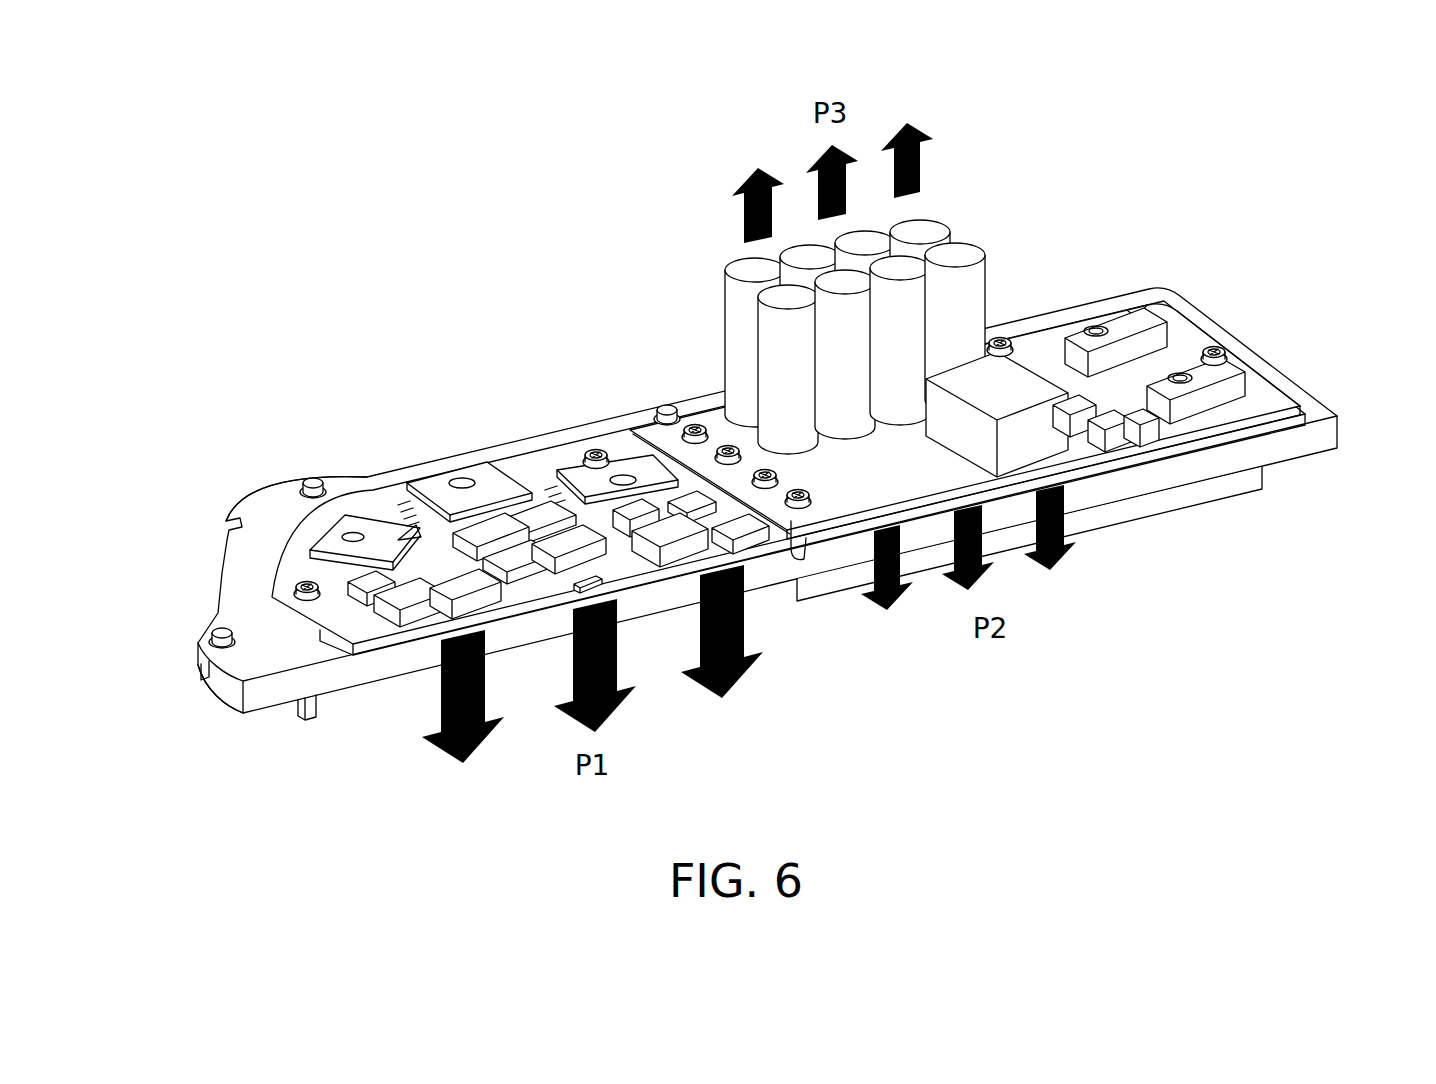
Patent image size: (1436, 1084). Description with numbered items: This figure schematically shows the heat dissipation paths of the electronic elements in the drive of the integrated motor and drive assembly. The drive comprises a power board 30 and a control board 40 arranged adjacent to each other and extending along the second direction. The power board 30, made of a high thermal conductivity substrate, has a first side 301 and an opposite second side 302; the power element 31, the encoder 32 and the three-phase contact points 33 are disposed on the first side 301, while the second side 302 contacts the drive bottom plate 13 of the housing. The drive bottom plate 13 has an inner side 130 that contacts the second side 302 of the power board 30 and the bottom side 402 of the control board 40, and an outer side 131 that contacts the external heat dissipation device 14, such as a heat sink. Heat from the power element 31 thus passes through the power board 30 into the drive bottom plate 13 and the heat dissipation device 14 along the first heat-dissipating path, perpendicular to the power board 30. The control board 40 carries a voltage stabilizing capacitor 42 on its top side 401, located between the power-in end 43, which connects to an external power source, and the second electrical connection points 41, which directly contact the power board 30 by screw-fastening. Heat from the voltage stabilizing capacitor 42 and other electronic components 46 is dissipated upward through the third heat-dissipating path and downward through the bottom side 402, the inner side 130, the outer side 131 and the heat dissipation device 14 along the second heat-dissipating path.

The drive bottom plate 13 is at (225, 677).
The inner side 130 is at (252, 652).
The outer side 131 is at (273, 711).
The heat dissipation device 14 is at (797, 590).
The power board 30 is at (365, 646).
The first side 301 is at (293, 557).
The second side 302 is at (413, 641).
The power element 31 is at (412, 553).
The encoder 32 is at (453, 480).
The three-phase contact points 33 is at (488, 478).
The control board 40 is at (1015, 421).
The top side 401 is at (1257, 387).
The bottom side 402 is at (1230, 433).
The second electrical connection points 41 is at (655, 424).
The voltage stabilizing capacitor 42 is at (955, 256).
The power-in end 43 is at (1138, 317).
The other electronic components 46 is at (1010, 373).